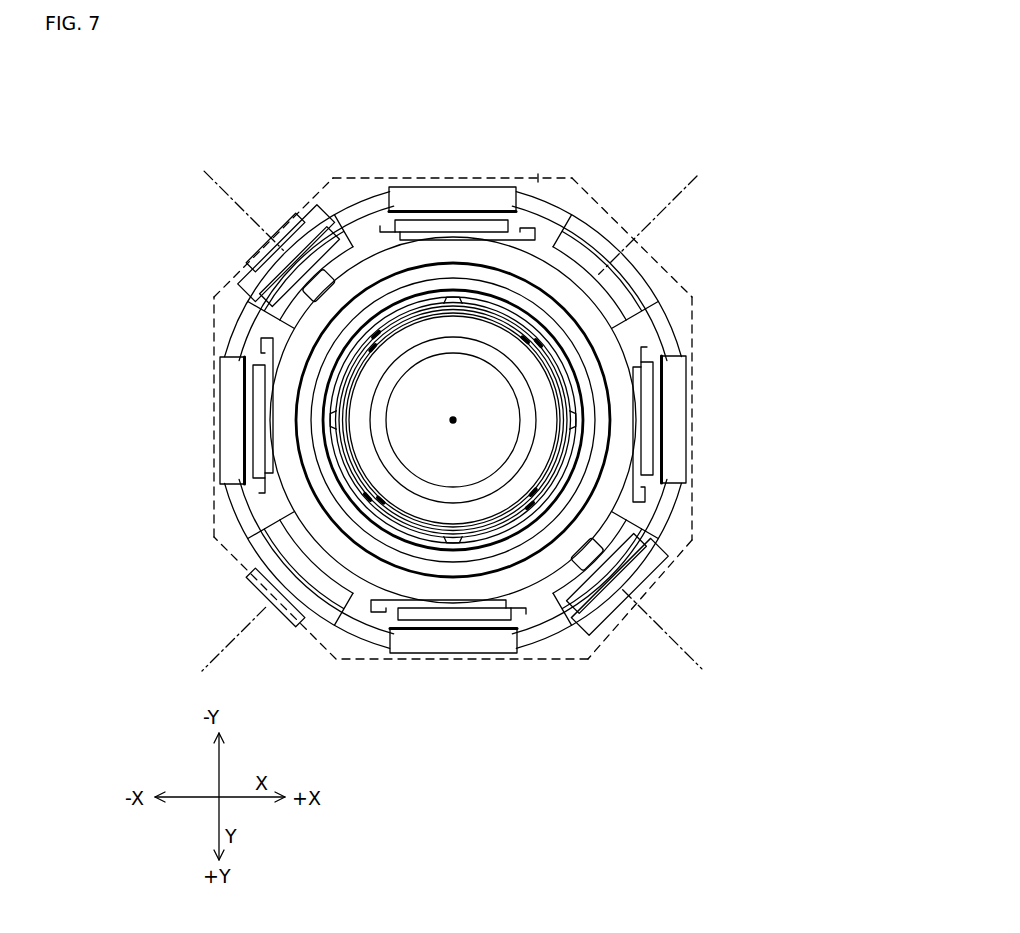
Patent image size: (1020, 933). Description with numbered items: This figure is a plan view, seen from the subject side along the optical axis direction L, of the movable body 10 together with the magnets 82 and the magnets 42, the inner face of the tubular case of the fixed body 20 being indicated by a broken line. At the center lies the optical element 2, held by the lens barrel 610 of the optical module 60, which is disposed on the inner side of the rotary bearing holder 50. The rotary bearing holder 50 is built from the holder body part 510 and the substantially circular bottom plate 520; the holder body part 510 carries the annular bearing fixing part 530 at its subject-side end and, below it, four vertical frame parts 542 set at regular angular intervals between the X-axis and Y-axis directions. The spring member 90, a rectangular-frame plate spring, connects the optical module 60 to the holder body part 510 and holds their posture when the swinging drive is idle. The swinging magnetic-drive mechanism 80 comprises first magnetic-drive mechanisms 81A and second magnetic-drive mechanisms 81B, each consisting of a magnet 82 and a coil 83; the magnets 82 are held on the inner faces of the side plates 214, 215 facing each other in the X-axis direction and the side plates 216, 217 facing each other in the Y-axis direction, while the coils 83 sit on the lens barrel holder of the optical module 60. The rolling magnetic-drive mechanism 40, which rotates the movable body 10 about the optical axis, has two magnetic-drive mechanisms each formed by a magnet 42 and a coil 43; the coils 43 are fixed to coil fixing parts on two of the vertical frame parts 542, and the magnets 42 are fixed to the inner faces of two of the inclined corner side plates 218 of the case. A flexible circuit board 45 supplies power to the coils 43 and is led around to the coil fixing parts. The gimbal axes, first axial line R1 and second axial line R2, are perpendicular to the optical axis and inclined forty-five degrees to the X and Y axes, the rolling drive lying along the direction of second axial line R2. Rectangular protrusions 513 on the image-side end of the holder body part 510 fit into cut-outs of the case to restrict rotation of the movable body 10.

The optical element 2 is at (462, 454).
The movable body 10 is at (226, 531).
The fixed body 20 is at (446, 421).
The rolling magnetic-drive mechanism 40 is at (503, 422).
The magnet 42 is at (312, 225).
The coil 43 is at (268, 235).
The flexible circuit board 45 is at (573, 622).
The rotary bearing holder 50 is at (510, 420).
The optical module 60 is at (347, 420).
The swinging magnetic-drive mechanism 80 is at (451, 421).
The first magnetic-drive mechanism 81A is at (751, 366).
The second magnetic-drive mechanism 81B is at (422, 120).
The magnet 82 is at (410, 196).
The coil 83 is at (400, 229).
The spring member 90 is at (418, 300).
The side plate 214 is at (696, 489).
The side plate 215 is at (216, 512).
The side plate 216 is at (497, 661).
The side plate 217 is at (541, 177).
The side plate 218 is at (598, 216).
The holder body part 510 is at (655, 293).
The protrusion 513 is at (255, 232).
The bottom plate 520 is at (673, 333).
The bearing fixing part 530 is at (598, 441).
The vertical frame part 542 is at (272, 332).
The lens barrel 610 is at (358, 427).
The optical axis direction L is at (456, 417).
The first axial line R1 is at (456, 390).
The second axial line R2 is at (487, 420).